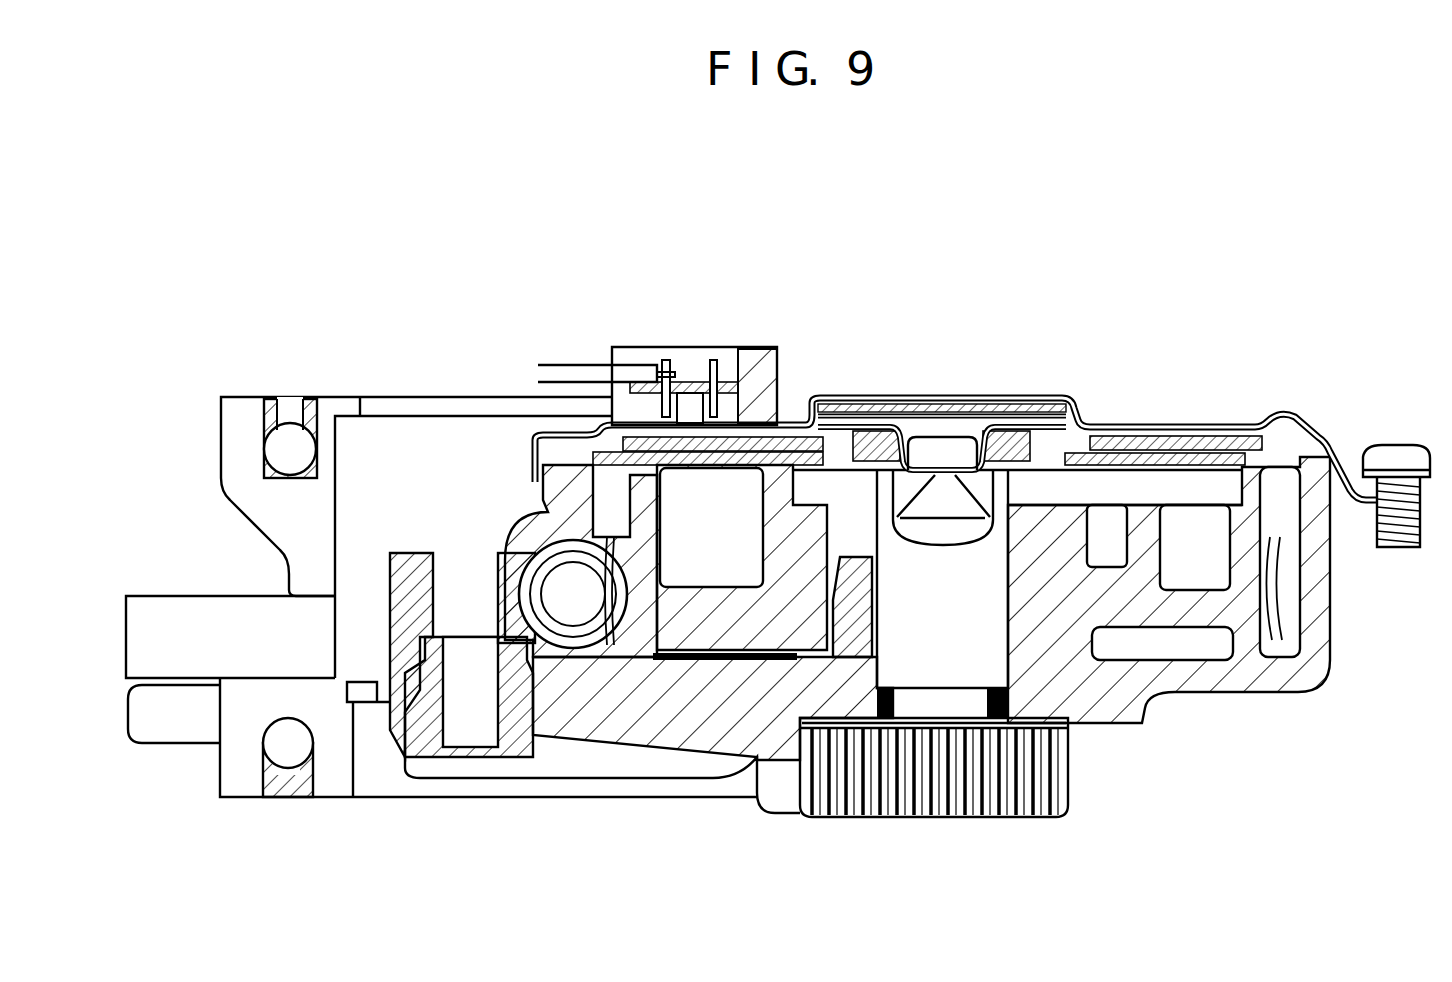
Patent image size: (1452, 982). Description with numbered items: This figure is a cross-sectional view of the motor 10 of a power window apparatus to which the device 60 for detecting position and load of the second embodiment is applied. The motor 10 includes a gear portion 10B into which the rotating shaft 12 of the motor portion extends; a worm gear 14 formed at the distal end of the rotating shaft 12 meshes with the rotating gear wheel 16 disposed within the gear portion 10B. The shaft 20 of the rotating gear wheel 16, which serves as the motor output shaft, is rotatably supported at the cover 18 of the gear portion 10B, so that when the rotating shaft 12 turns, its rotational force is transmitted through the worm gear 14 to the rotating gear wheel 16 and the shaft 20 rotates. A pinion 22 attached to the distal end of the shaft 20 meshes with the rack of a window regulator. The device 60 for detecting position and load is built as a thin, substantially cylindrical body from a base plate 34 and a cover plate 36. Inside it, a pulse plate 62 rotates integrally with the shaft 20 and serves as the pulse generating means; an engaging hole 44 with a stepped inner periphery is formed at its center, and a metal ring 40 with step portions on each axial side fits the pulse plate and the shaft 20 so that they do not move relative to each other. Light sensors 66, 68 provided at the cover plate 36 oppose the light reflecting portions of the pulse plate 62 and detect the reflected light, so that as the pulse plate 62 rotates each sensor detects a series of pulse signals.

The motor 10 is at (203, 450).
The gear portion 10B is at (1340, 630).
The rotating shaft 12 is at (565, 620).
The worm gear 14 is at (584, 636).
The rotating gear wheel 16 is at (683, 662).
The cover 18 is at (1207, 694).
The shaft 20 is at (927, 652).
The pinion 22 is at (1003, 815).
The base plate 34 is at (1173, 440).
The cover plate 36 is at (1205, 425).
The metal ring 40 is at (853, 445).
The engaging hole 44 is at (943, 455).
The device for detecting position and load 60 is at (1100, 395).
The pulse plate 62 is at (775, 420).
The light sensor 66 is at (687, 417).
The light sensor 68 is at (713, 388).